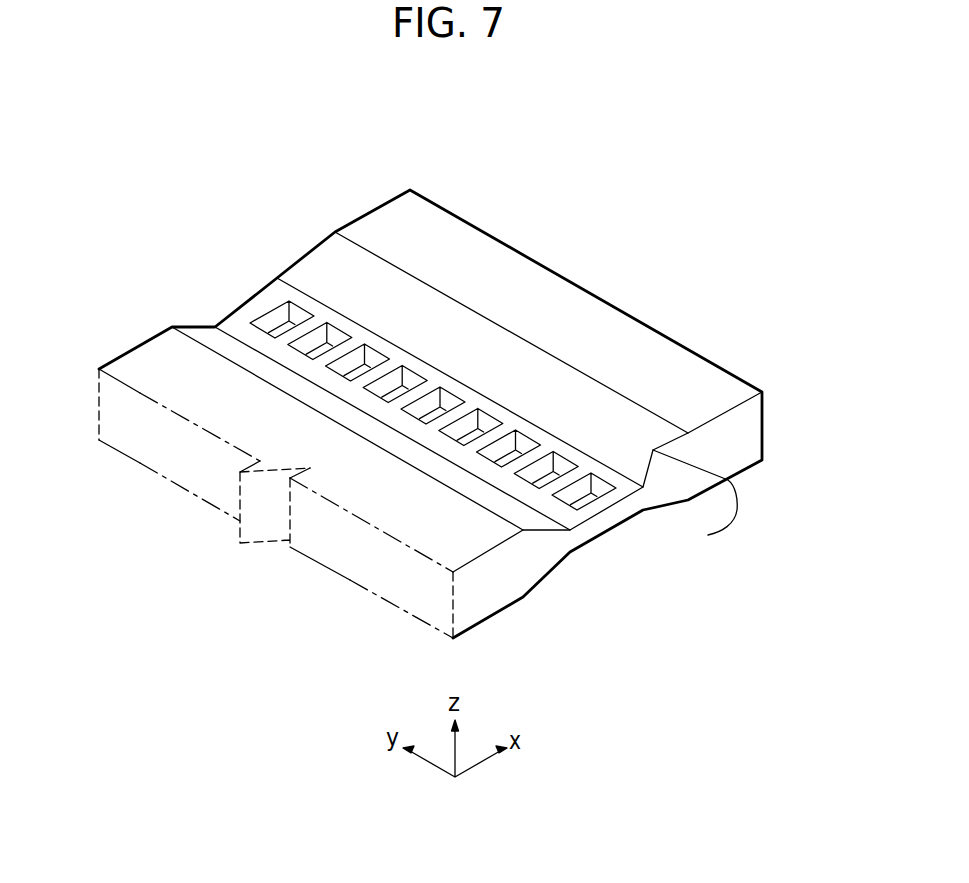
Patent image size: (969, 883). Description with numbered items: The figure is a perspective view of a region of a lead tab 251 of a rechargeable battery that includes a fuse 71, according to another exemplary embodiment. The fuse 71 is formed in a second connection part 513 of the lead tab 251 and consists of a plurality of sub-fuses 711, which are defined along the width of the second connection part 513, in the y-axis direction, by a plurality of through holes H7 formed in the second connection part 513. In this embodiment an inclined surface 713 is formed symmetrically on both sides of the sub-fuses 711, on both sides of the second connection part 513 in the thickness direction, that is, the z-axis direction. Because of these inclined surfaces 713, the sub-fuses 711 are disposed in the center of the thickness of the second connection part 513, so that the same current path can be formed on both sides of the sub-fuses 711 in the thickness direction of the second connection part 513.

The fuse 71 is at (449, 380).
The sub-fuses 711 is at (263, 305).
The through holes H7 is at (356, 358).
The second connection part 513 is at (578, 318).
The lead tab 251 is at (512, 329).
The inclined surface 713 is at (667, 505).